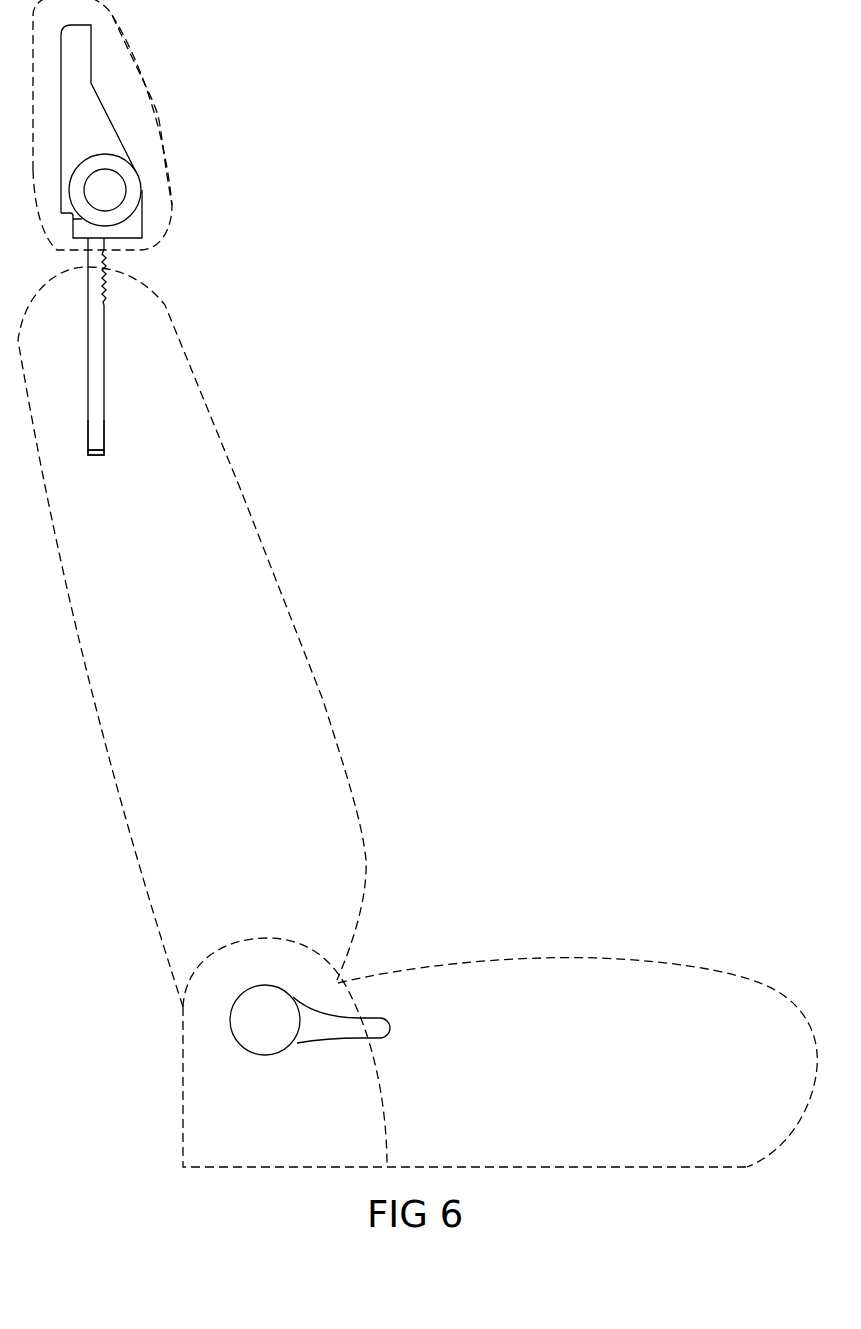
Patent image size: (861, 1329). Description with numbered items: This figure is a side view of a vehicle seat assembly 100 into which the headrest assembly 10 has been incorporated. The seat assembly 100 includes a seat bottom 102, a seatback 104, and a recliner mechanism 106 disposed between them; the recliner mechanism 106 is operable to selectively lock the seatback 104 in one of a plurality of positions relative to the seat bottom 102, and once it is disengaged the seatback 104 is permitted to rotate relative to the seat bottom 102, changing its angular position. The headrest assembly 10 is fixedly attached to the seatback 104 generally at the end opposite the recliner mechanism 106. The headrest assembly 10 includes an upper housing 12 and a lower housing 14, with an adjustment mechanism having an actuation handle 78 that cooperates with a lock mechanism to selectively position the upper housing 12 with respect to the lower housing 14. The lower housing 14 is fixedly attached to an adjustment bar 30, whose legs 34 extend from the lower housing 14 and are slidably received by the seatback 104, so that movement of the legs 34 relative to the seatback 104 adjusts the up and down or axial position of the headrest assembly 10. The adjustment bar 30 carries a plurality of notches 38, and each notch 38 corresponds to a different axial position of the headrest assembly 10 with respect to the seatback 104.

The headrest assembly 10 is at (153, 112).
The upper housing 12 is at (92, 68).
The lower housing 14 is at (143, 228).
The actuation handle 78 is at (115, 190).
The adjustment bar 30 is at (192, 346).
The notches 38 is at (104, 285).
The legs 34 is at (98, 429).
The vehicle seat assembly 100 is at (417, 717).
The seatback 104 is at (305, 652).
The seat bottom 102 is at (607, 958).
The recliner mechanism 106 is at (293, 995).